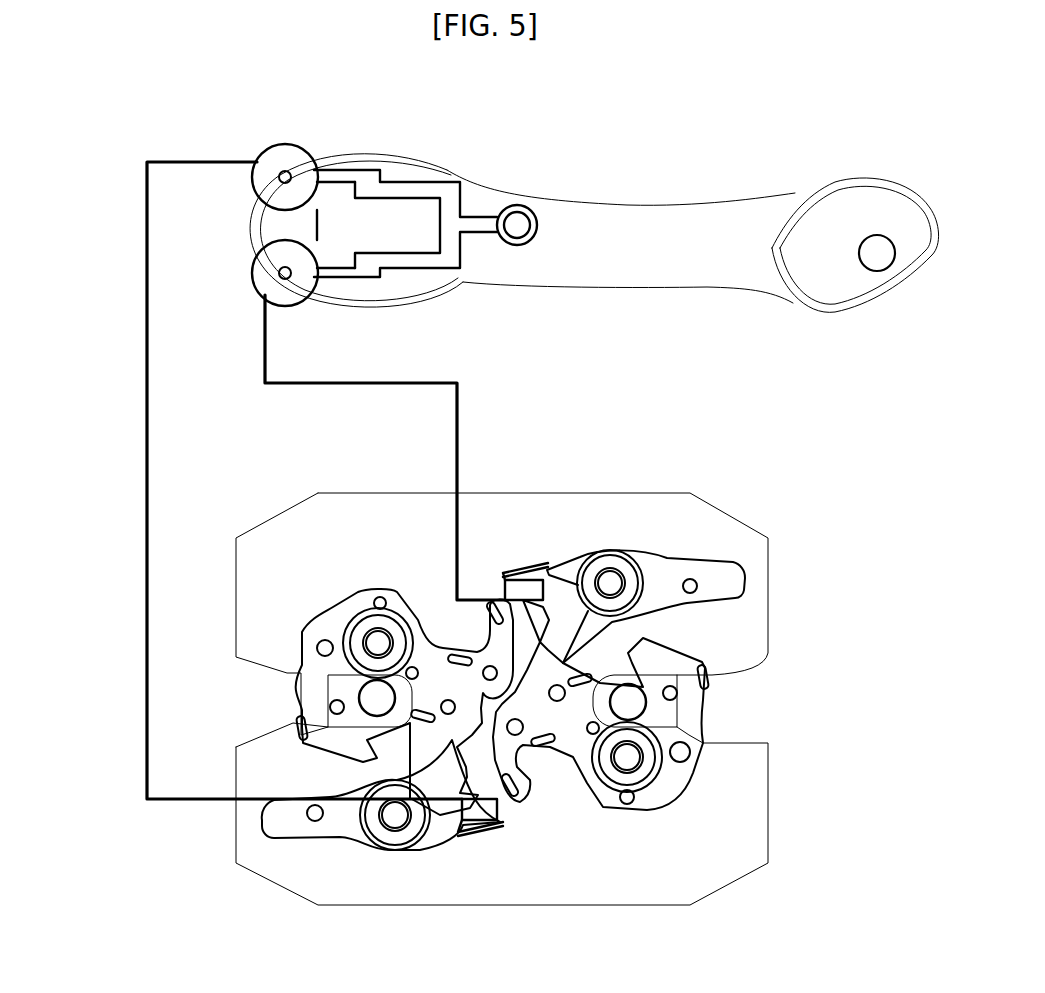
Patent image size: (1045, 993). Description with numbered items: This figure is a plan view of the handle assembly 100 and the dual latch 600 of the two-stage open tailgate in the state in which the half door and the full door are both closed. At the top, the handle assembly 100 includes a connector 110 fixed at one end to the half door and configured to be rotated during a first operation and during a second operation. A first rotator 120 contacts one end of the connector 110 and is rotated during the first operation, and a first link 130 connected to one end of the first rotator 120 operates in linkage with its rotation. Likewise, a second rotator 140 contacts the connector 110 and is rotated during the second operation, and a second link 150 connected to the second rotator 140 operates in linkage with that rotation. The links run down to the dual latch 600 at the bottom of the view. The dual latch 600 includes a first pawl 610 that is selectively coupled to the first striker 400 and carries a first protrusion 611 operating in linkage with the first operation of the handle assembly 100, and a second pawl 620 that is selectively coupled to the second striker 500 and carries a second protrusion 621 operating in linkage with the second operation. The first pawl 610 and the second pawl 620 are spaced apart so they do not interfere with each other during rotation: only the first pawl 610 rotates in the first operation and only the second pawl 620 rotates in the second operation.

The handle assembly 100 is at (708, 201).
The connector 110 is at (442, 260).
The first rotator 120 is at (275, 162).
The first link 130 is at (147, 290).
The second rotator 140 is at (297, 292).
The second link 150 is at (355, 386).
The first striker 400 is at (340, 637).
The second striker 500 is at (705, 745).
The dual latch 600 is at (770, 668).
The first pawl 610 is at (447, 710).
The first protrusion 611 is at (482, 812).
The second pawl 620 is at (517, 729).
The second protrusion 621 is at (530, 588).